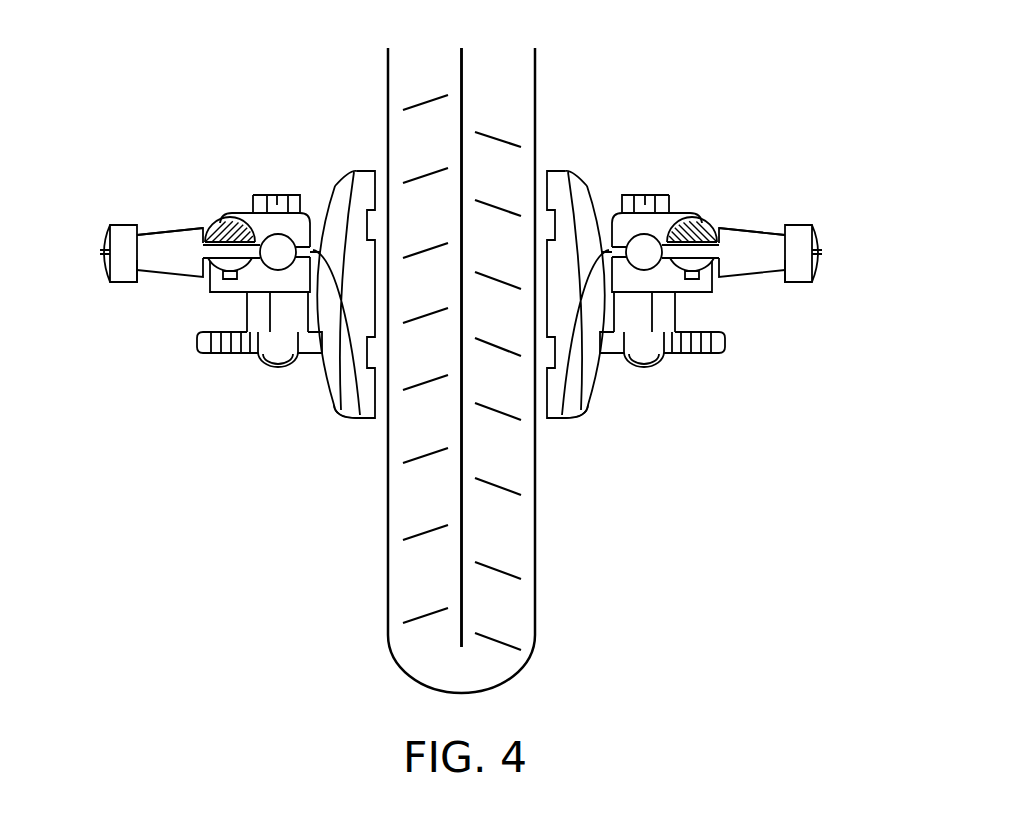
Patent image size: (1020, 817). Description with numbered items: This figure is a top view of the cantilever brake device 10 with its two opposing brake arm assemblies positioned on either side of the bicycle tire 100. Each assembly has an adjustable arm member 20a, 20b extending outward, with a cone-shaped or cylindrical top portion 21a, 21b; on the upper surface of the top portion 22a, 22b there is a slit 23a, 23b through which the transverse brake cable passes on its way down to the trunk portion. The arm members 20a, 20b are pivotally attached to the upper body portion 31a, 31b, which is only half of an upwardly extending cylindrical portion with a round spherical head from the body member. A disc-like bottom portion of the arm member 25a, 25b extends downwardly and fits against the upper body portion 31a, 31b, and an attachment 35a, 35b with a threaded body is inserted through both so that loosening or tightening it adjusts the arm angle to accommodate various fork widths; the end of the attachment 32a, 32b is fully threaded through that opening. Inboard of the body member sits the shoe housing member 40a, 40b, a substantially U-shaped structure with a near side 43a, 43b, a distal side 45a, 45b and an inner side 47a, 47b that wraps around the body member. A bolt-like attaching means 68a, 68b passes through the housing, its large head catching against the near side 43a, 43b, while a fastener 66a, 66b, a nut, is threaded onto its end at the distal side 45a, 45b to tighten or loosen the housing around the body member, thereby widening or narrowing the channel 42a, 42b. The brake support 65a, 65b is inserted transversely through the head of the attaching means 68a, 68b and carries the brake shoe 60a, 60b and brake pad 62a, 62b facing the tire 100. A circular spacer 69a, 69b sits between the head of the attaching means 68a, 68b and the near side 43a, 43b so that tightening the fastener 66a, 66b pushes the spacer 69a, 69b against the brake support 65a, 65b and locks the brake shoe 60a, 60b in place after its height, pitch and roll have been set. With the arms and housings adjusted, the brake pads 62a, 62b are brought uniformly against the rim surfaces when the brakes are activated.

The cantilever brake device 10 is at (727, 38).
The bicycle tire 100 is at (508, 540).
The adjustable arm member 20a is at (787, 226).
The adjustable arm member 20b is at (166, 250).
The top portion of the arm member 21a is at (832, 282).
The top portion of the arm member 21b is at (125, 268).
The top portion of the adjustable arm member 22a is at (835, 246).
The top portion of the adjustable arm member 22b is at (104, 242).
The slit 23a is at (848, 258).
The slit 23b is at (104, 253).
The bottom portion of the arm member 25a is at (754, 246).
The bottom portion of the arm member 25b is at (168, 246).
The upper body portion 31a is at (772, 300).
The upper body portion 31b is at (228, 270).
The end of the attachment 32a is at (754, 309).
The end of the attachment 32b is at (255, 280).
The attachment 35a is at (700, 240).
The attachment 35b is at (222, 240).
The shoe housing member 40a is at (678, 296).
The shoe housing member 40b is at (247, 295).
The channel 42a is at (552, 415).
The channel 42b is at (372, 415).
The near side 43a is at (658, 362).
The near side 43b is at (263, 362).
The distal side 45a is at (670, 189).
The distal side 45b is at (246, 212).
The inner side 47a is at (659, 173).
The inner side 47b is at (323, 218).
The brake shoe 60a is at (592, 195).
The brake shoe 60b is at (330, 192).
The brake pad 62a is at (575, 247).
The brake pad 62b is at (363, 187).
The brake support 65a is at (712, 345).
The brake support 65b is at (211, 345).
The fastener 66a is at (645, 197).
The fastener 66b is at (280, 197).
The attaching means 68a is at (645, 353).
The attaching means 68b is at (277, 353).
The spacer 69a is at (634, 317).
The spacer 69b is at (288, 317).